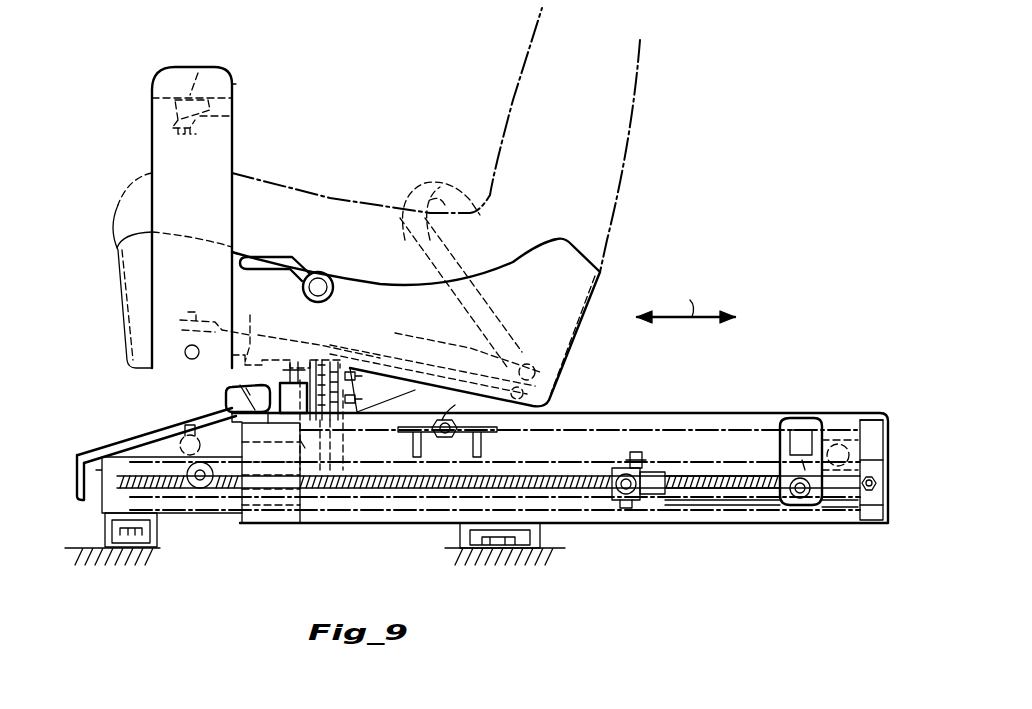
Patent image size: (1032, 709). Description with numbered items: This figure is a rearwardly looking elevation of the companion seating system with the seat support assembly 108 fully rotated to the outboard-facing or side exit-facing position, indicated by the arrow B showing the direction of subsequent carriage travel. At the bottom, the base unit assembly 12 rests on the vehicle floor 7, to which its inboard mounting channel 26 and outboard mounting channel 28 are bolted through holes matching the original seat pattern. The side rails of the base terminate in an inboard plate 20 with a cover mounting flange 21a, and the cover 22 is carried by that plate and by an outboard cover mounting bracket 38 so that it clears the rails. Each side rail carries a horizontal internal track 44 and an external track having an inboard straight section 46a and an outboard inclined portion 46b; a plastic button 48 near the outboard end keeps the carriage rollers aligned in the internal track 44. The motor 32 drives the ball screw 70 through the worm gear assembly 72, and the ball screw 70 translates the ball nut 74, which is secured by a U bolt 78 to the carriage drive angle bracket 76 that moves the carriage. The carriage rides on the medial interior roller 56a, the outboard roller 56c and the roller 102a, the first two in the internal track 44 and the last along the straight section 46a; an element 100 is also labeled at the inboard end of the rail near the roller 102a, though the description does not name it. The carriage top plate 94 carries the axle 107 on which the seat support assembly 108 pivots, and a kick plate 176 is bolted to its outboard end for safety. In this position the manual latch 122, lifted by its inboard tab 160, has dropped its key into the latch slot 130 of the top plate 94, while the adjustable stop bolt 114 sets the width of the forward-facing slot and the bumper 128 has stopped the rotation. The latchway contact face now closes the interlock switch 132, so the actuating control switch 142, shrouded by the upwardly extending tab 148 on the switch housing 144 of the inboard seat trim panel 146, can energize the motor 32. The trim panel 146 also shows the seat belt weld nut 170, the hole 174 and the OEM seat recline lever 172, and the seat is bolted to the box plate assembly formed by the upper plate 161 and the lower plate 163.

The vehicle floor 7 is at (128, 560).
The base unit assembly 12 is at (897, 417).
The inboard plate 20 is at (890, 470).
The cover mounting flange 21a is at (862, 512).
The cover 22 is at (592, 412).
The inboard mounting channel 26 is at (460, 545).
The outboard mounting channel 28 is at (103, 530).
The motor 32 is at (838, 413).
The outboard cover mounting bracket 38 is at (250, 525).
The internal track 44 is at (524, 470).
The inboard horizontal straight section 46a is at (728, 470).
The outboard inclined portion 46b is at (378, 518).
The plastic button 48 is at (162, 432).
The medial interior roller 56a is at (640, 505).
The outboard roller 56c is at (198, 490).
The ball screw 70 is at (712, 505).
The worm gear assembly 72 is at (840, 508).
The ball nut 74 is at (650, 470).
The carriage drive angle bracket 76 is at (620, 505).
The U bolt 78 is at (627, 512).
The carriage top plate 94 is at (652, 420).
The rear lever 100 is at (788, 417).
The roller 102a is at (784, 506).
The axle 107 is at (305, 520).
The seat support assembly 108 is at (716, 293).
The adjustable stop bolt 114 is at (453, 413).
The manual latch 122 is at (358, 387).
The bumper 128 is at (286, 337).
The latch slot 130 is at (330, 500).
The interlock switch 132 is at (226, 388).
The actuating control switch 142 is at (206, 78).
The switch housing 144 is at (233, 154).
The inboard seat trim panel 146 is at (580, 262).
The upwardly extending tab 148 is at (234, 93).
The inboard tab 160 is at (335, 358).
The upper plate 161 is at (250, 315).
The lower plate 163 is at (213, 318).
The seat belt weld nut 170 is at (537, 360).
The OEM seat recline lever 172 is at (303, 262).
The hole 174 is at (333, 296).
The kick plate 176 is at (68, 456).